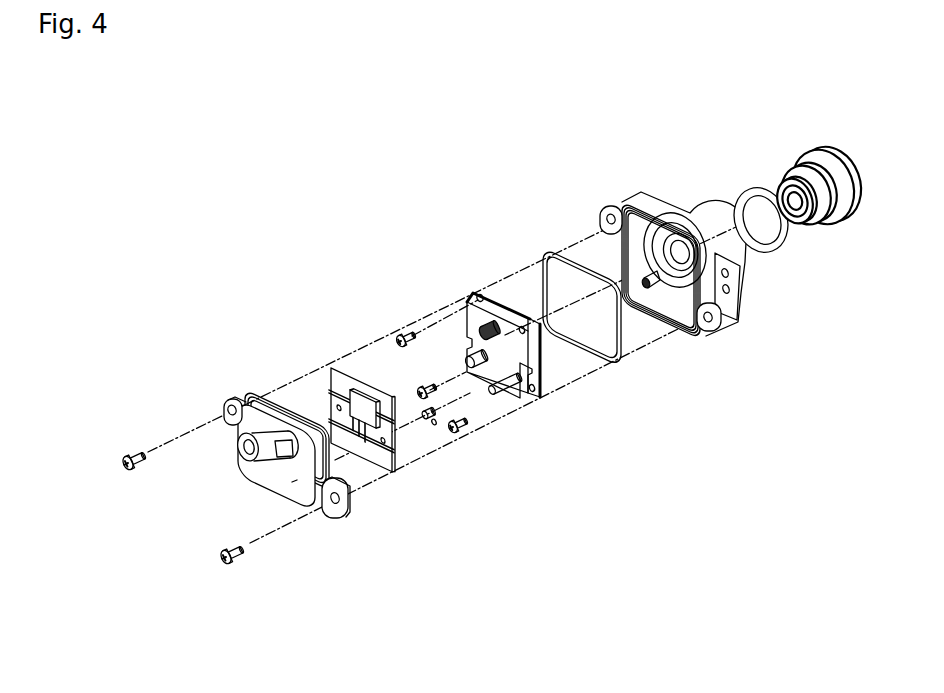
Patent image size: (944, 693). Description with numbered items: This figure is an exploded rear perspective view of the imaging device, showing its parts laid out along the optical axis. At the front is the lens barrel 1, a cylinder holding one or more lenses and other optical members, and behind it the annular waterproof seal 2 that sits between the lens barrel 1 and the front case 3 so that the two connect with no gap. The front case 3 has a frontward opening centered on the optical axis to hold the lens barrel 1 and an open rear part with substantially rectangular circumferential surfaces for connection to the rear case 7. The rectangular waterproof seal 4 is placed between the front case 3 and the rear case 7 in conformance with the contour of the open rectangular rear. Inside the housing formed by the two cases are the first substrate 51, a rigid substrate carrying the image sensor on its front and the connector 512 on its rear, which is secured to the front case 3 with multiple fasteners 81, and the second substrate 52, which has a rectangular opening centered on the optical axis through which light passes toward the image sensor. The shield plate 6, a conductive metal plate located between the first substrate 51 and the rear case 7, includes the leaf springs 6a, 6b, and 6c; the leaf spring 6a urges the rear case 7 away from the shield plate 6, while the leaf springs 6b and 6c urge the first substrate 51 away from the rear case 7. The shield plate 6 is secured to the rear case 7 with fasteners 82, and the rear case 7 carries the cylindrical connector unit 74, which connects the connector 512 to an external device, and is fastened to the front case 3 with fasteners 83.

The lens barrel 1 is at (823, 148).
The waterproof seal 2 is at (750, 190).
The front case 3 is at (660, 197).
The waterproof seal 4 is at (570, 250).
The first substrate 51 is at (500, 376).
The connector 512 is at (482, 298).
The second substrate 52 is at (502, 300).
The shield plate 6 is at (375, 382).
The leaf spring 6a is at (340, 383).
The leaf spring 6b is at (425, 423).
The leaf spring 6c is at (353, 387).
The rear case 7 is at (258, 414).
The connector unit 74 is at (237, 394).
The fasteners 81 is at (400, 336).
The fasteners 82 is at (434, 425).
The fasteners 83 is at (135, 452).